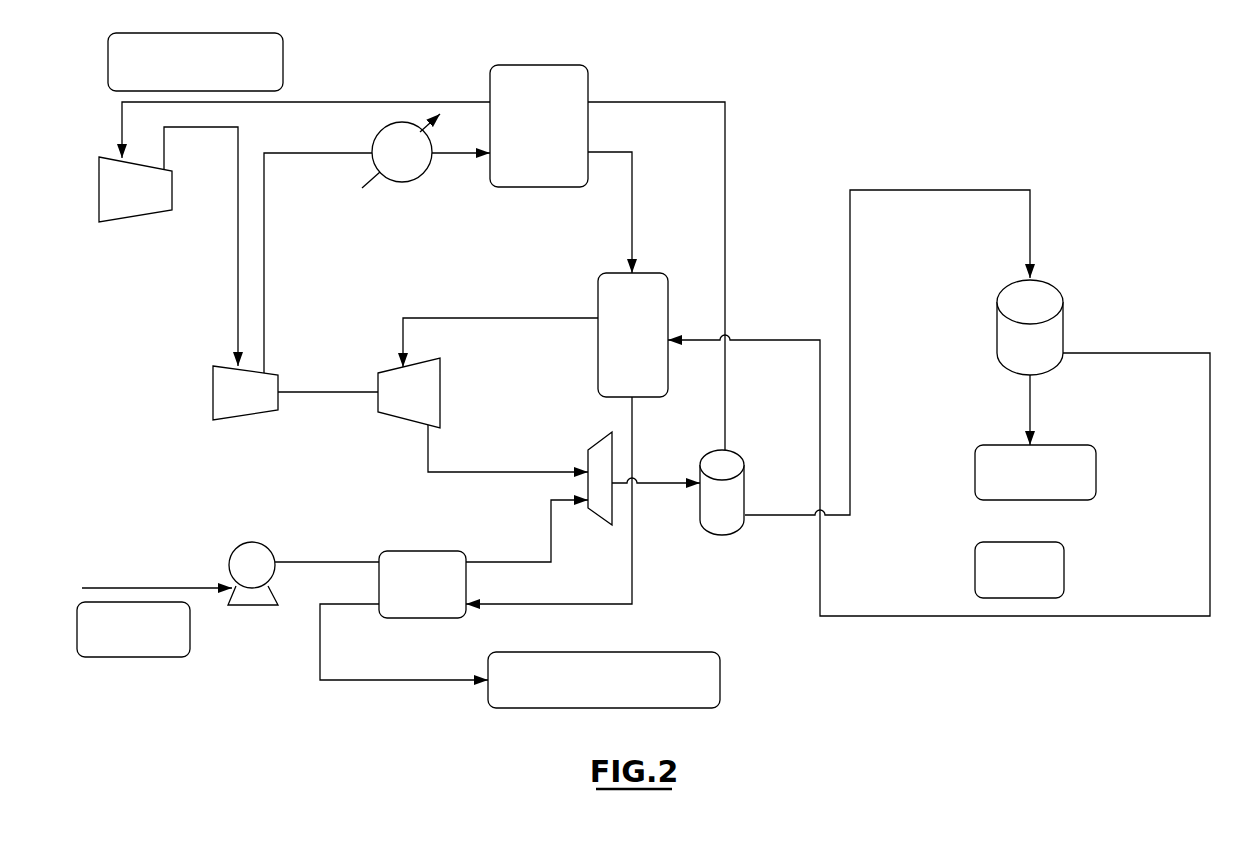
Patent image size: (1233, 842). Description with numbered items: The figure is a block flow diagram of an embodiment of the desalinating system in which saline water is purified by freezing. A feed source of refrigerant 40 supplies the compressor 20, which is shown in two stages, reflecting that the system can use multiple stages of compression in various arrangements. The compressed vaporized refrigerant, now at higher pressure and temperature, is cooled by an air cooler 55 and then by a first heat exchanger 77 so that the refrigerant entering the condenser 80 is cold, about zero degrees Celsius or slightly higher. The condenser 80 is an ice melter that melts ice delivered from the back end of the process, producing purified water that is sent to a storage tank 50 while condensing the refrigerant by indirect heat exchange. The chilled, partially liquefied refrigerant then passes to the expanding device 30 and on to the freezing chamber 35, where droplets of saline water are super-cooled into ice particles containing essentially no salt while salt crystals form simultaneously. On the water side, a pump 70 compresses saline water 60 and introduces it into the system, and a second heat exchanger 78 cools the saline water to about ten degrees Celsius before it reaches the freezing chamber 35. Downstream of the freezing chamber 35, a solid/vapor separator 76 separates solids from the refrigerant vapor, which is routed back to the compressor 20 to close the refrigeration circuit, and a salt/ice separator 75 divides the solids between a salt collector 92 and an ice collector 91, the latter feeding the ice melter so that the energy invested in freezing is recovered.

The compressor 20 is at (123, 202).
The expanding device 30 is at (397, 405).
The freezing chamber 35 is at (600, 452).
The refrigerant 40 is at (183, 74).
The storage tank 50 is at (540, 692).
The air cooler 55 is at (389, 164).
The saline water 60 is at (99, 639).
The pump 70 is at (239, 577).
The salt/ice separator 75 is at (1017, 360).
The solid/vapor separator 76 is at (709, 517).
The first heat exchanger 77 is at (527, 140).
The second heat exchanger 78 is at (409, 594).
The condenser 80 is at (619, 337).
The ice collector 91 is at (995, 580).
The salt collector 92 is at (995, 482).